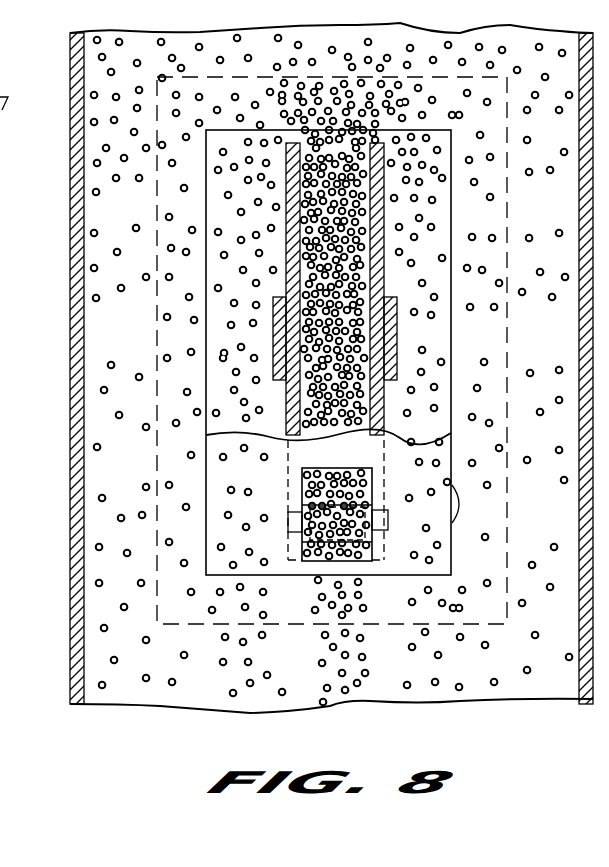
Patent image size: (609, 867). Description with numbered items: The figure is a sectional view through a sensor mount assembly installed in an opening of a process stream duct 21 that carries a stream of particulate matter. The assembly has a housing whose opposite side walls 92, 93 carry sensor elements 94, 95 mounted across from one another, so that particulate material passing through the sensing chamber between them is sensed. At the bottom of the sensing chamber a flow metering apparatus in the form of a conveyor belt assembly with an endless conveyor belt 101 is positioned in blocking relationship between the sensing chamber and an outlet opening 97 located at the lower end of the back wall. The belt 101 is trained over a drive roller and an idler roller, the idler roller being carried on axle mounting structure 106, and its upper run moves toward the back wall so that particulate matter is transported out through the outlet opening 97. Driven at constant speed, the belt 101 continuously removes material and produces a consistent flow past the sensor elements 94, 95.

The process stream duct 21 is at (70, 352).
The side wall 92 is at (384, 213).
The side wall 93 is at (285, 218).
The sensor element 94 is at (397, 335).
The sensor element 95 is at (274, 335).
The outlet opening 97 is at (310, 484).
The endless conveyor belt 101 is at (325, 528).
The axle mounting structure 106 is at (388, 518).